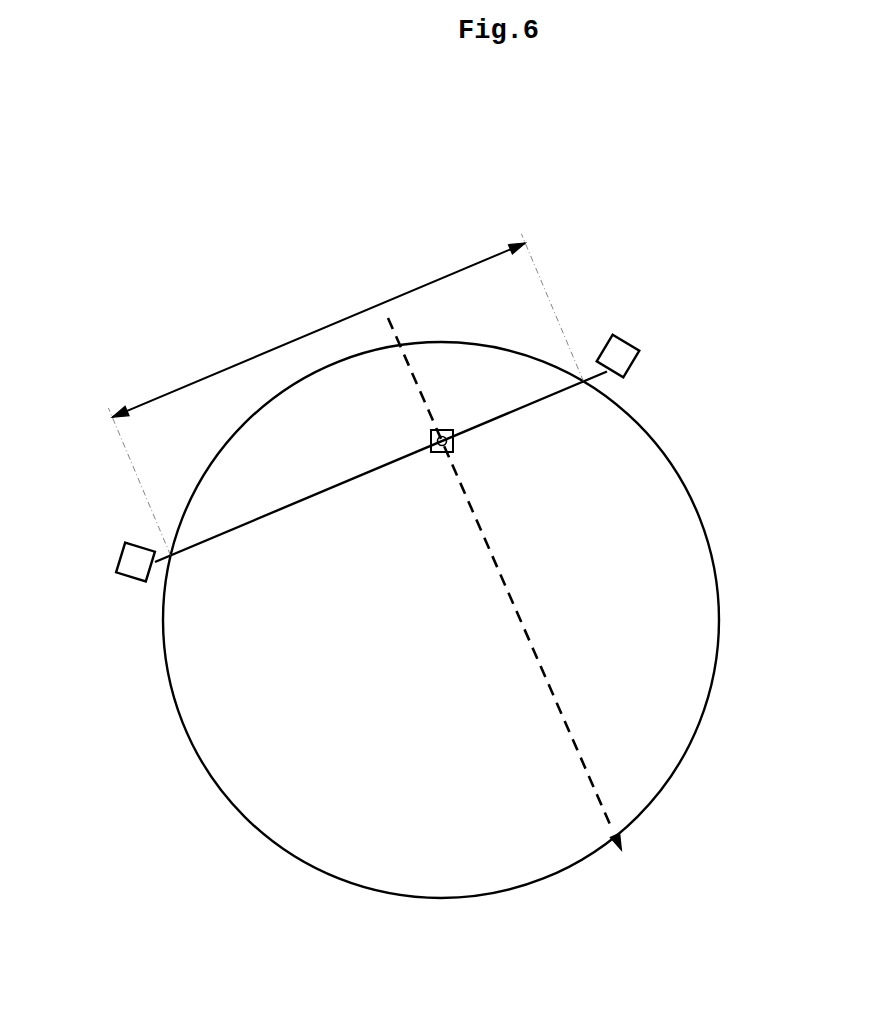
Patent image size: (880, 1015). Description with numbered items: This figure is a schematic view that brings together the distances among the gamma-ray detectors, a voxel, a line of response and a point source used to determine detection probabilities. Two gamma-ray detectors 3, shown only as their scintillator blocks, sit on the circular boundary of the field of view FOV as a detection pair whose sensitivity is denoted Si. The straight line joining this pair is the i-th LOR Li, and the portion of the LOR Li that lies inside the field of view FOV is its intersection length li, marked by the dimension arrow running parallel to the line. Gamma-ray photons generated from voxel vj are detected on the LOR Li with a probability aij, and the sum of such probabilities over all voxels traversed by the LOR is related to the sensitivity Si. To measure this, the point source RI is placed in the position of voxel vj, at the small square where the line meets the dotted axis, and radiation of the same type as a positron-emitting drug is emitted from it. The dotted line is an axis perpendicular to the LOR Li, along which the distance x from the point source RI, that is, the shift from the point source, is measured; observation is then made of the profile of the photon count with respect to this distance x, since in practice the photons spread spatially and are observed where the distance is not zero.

The gamma-ray detector 3 is at (371, 473).
The sensitivity of the detection pair Si is at (387, 473).
The field of view FOV is at (437, 343).
The i-th LOR Li is at (515, 412).
The intersection length li is at (270, 348).
The point source RI is at (464, 426).
The detection probability aij is at (468, 448).
The voxel vj is at (440, 457).
The distance from the point source x is at (622, 858).